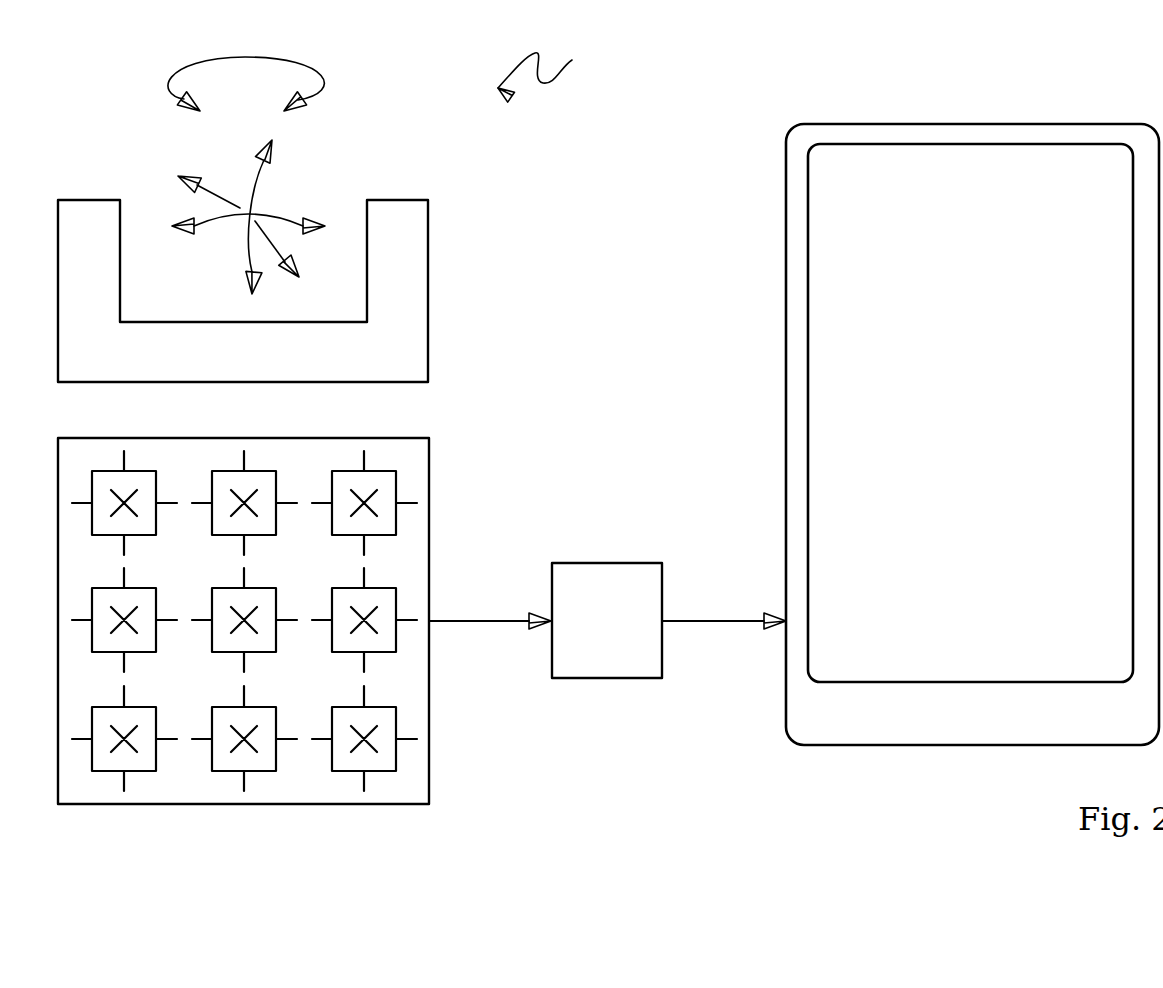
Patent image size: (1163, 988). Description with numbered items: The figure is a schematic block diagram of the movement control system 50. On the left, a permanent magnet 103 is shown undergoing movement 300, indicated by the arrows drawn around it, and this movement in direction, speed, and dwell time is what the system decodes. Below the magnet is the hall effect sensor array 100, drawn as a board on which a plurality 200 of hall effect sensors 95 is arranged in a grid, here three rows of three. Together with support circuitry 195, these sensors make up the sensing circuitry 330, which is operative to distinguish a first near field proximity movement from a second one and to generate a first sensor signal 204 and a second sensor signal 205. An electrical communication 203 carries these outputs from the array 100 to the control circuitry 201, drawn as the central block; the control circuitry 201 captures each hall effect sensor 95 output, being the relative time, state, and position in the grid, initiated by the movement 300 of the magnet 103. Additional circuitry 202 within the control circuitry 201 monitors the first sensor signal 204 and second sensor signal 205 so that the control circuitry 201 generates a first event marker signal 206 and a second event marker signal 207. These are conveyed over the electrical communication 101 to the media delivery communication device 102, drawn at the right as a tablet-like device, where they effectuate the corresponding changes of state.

The movement control system 50 is at (546, 69).
The media delivery communication device 102 is at (855, 123).
The permanent magnet 103 is at (428, 247).
The movement 300 is at (197, 62).
The hall effect sensor 95 is at (412, 600).
The hall effect sensor array 100 is at (412, 600).
The plurality of hall effect sensors 200 is at (412, 600).
The support circuitry 195 is at (412, 600).
The sensing circuitry 330 is at (400, 437).
The electrical communication 203 is at (506, 548).
The first sensor signal 204 is at (506, 548).
The second sensor signal 205 is at (485, 621).
The control circuitry 201 is at (607, 668).
The additional circuitry 202 is at (582, 678).
The electrical communication 101 is at (715, 566).
The first event marker signal 206 is at (715, 566).
The second event marker signal 207 is at (717, 621).